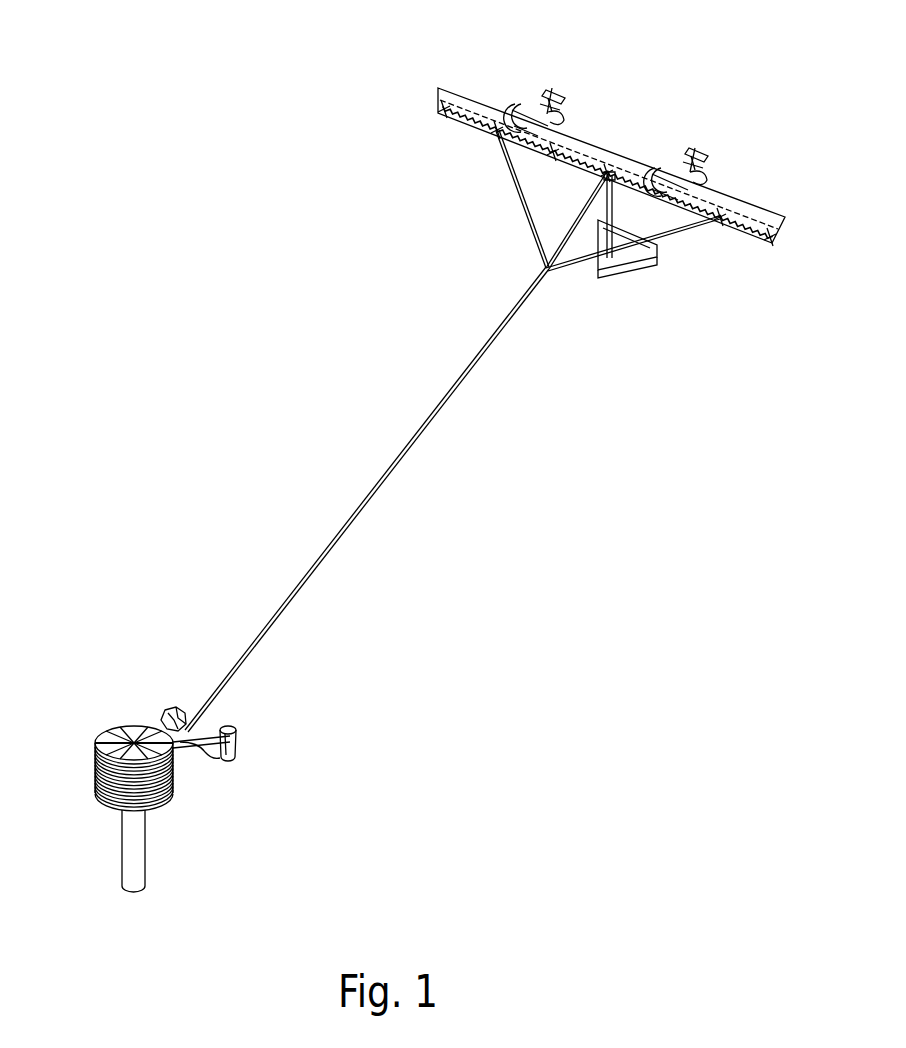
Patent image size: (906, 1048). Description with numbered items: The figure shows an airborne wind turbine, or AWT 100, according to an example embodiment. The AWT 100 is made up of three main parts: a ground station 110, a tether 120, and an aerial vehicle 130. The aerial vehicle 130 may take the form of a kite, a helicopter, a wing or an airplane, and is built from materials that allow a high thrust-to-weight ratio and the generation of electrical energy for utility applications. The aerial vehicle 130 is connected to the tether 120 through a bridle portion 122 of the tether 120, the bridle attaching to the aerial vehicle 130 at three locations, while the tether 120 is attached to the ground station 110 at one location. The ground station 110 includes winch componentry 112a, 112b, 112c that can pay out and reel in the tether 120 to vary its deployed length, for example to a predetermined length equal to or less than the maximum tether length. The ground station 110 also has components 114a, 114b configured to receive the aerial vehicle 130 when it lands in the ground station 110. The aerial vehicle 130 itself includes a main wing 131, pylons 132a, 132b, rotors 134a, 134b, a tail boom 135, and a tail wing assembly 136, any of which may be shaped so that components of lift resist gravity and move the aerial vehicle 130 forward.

The airborne wind turbine 100 is at (252, 116).
The ground station 110 is at (58, 720).
The winch componentry 112a is at (170, 798).
The winch componentry 112b is at (132, 735).
The winch componentry 112c is at (197, 735).
The component for receiving the aerial vehicle 114a is at (197, 753).
The component for receiving the aerial vehicle 114b is at (172, 708).
The tether 120 is at (484, 352).
The bridle portion 122 is at (512, 170).
The aerial vehicle 130 is at (634, 148).
The main wing 131 is at (738, 203).
The pylon 132a is at (560, 121).
The pylon 132b is at (690, 173).
The rotor 134a is at (557, 93).
The rotor 134b is at (530, 107).
The tail boom 135 is at (650, 228).
The tail wing assembly 136 is at (617, 263).